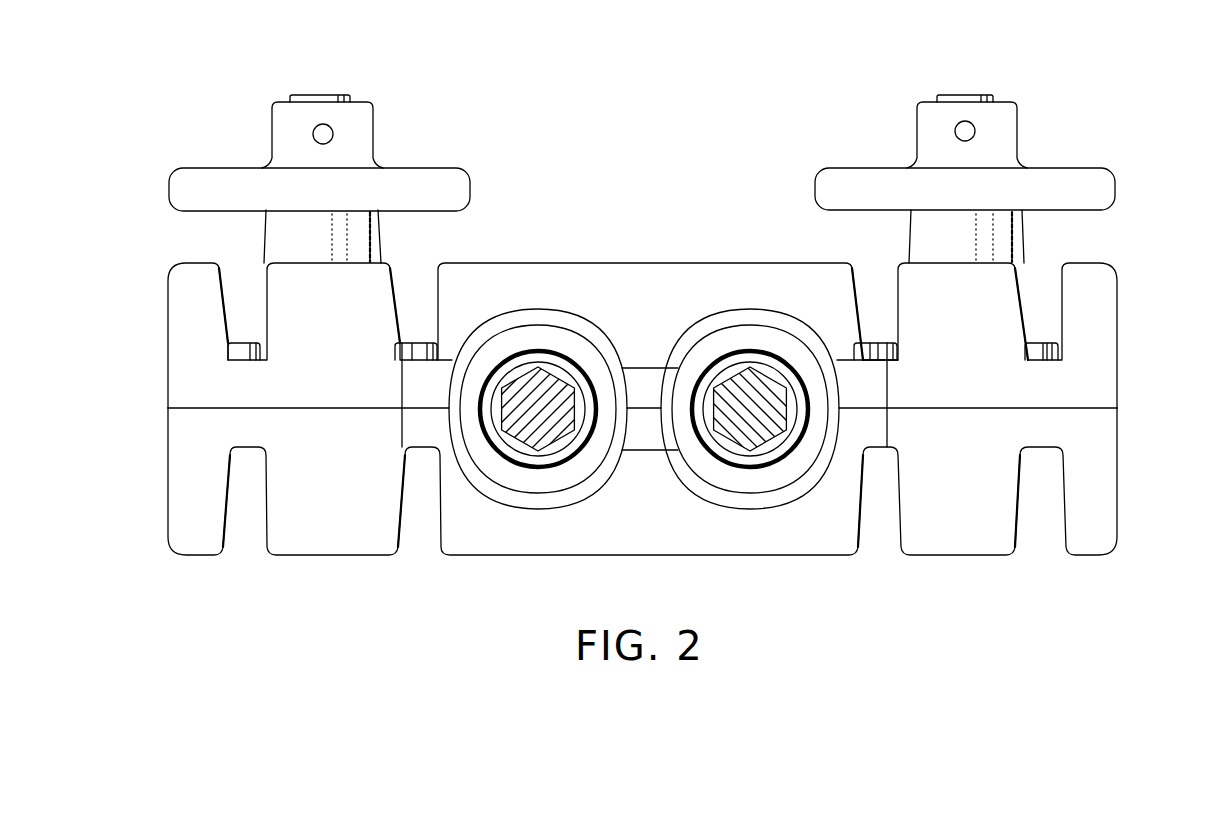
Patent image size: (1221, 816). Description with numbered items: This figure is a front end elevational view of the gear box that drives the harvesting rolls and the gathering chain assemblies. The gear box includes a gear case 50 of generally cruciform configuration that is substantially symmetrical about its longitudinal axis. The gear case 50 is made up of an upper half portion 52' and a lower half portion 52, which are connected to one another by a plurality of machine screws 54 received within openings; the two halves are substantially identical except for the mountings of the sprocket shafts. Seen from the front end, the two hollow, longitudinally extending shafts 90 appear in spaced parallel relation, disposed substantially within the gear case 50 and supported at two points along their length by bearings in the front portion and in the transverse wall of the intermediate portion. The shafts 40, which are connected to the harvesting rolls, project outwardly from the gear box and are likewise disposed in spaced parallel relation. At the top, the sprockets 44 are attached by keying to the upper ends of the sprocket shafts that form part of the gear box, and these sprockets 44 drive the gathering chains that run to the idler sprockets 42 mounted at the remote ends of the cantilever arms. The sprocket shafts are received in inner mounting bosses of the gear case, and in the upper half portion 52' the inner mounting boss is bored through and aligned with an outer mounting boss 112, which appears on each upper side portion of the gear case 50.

The shaft 40 is at (560, 392).
The idler sprocket 42 is at (344, 97).
The sprocket 44 is at (455, 170).
The gear case 50 is at (691, 372).
The lower half portion of gear case 52 is at (688, 481).
The upper half portion of gear case 52' is at (691, 355).
The machine screw 54 is at (233, 340).
The longitudinally extending shaft 90 is at (515, 378).
The outer mounting boss 112 is at (265, 234).